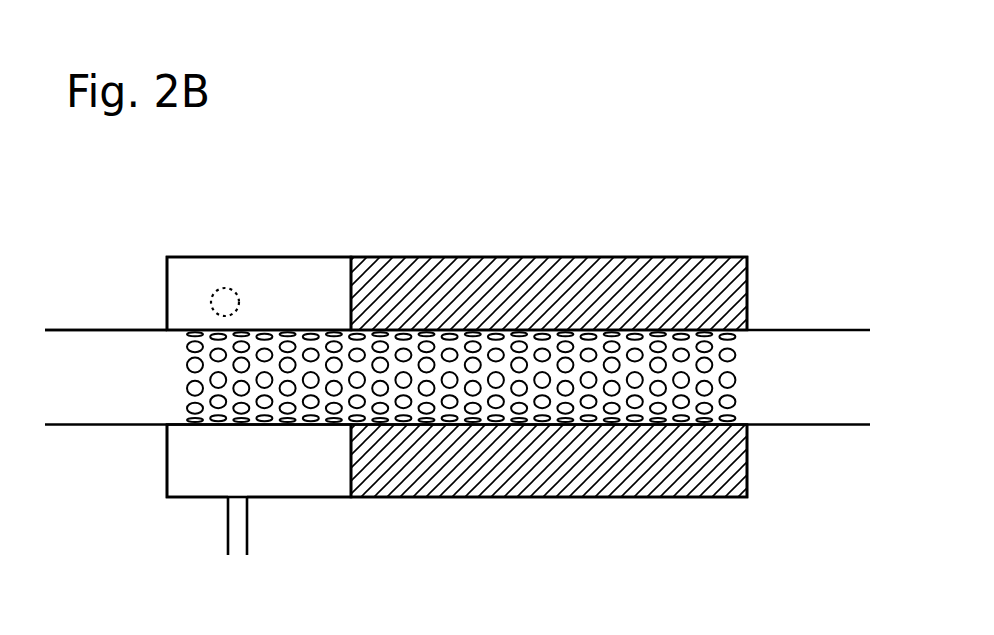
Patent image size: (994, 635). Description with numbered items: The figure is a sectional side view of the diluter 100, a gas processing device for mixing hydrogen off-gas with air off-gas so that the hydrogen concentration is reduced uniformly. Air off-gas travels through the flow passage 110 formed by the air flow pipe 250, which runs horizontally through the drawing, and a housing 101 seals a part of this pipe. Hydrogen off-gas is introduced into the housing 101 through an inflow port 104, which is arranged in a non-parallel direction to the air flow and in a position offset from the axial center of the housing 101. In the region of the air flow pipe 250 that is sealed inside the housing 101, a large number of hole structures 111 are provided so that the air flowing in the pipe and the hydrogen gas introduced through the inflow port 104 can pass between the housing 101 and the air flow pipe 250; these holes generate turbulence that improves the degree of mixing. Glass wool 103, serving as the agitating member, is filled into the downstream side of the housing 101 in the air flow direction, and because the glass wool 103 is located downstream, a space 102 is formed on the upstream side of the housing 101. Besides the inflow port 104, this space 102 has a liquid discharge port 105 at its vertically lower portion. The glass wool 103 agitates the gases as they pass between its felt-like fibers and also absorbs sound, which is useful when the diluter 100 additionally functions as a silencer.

The diluter 100 is at (717, 599).
The housing 101 is at (735, 258).
The space 102 is at (277, 290).
The glass wool 103 is at (418, 278).
The inflow port 104 is at (215, 290).
The liquid discharge port 105 is at (247, 537).
The flow passage 110 is at (808, 335).
The hole structures 111 is at (540, 380).
The air flow pipe 250 is at (87, 336).